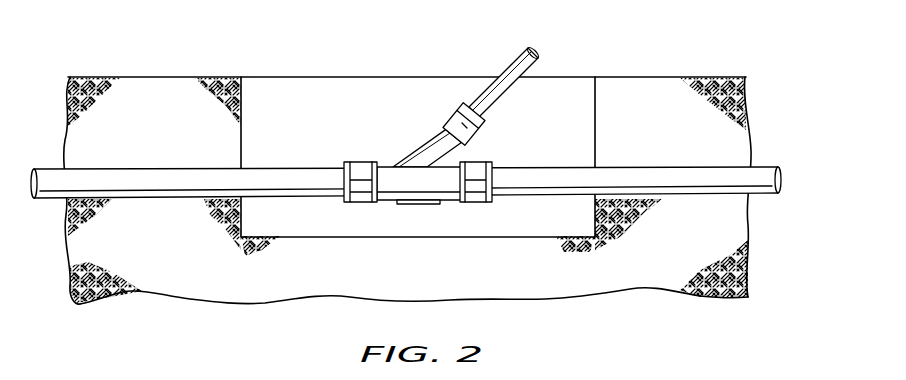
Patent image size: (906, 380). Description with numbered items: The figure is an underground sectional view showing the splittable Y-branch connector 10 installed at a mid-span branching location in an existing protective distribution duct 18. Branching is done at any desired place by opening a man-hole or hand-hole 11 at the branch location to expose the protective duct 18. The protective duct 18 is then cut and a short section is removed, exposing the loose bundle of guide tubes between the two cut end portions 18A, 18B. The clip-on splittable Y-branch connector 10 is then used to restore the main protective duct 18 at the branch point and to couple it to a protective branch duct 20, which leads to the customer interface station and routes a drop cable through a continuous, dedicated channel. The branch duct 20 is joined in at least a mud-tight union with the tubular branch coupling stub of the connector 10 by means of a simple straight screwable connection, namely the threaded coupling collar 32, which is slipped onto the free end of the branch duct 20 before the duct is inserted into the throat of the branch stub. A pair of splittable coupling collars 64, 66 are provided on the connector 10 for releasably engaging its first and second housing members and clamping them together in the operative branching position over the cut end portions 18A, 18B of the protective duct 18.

The Y-branch connector 10 is at (428, 108).
The man-hole or hand-hole 11 is at (243, 92).
The protective duct 18 is at (406, 169).
The cut end portion 18A is at (341, 190).
The cut end portion 18B is at (499, 190).
The branch duct 20 is at (506, 63).
The threaded coupling collar 32 is at (452, 111).
The splittable coupling collar 64 is at (356, 161).
The splittable coupling collar 66 is at (474, 161).